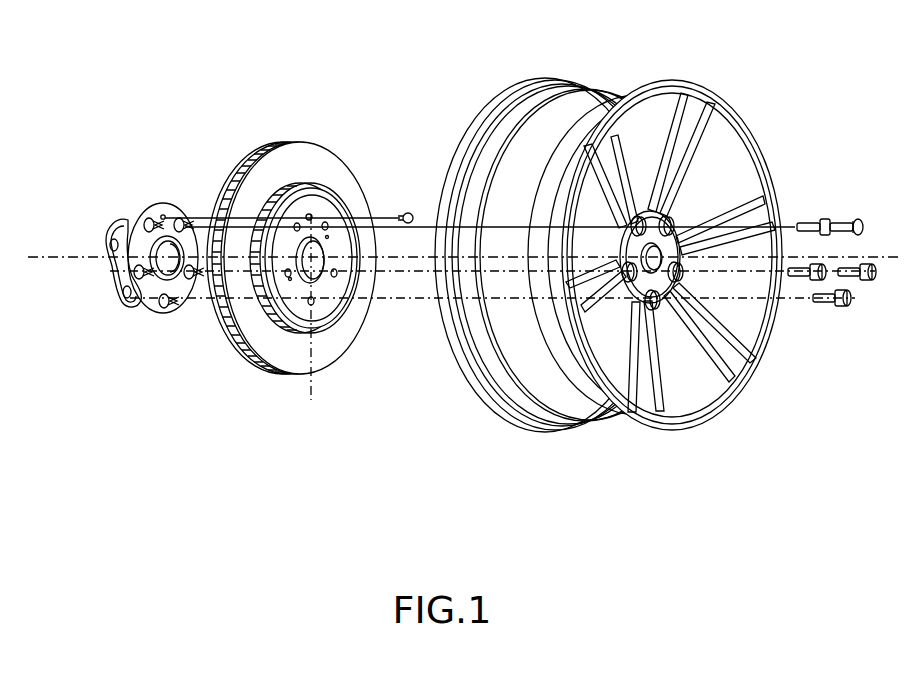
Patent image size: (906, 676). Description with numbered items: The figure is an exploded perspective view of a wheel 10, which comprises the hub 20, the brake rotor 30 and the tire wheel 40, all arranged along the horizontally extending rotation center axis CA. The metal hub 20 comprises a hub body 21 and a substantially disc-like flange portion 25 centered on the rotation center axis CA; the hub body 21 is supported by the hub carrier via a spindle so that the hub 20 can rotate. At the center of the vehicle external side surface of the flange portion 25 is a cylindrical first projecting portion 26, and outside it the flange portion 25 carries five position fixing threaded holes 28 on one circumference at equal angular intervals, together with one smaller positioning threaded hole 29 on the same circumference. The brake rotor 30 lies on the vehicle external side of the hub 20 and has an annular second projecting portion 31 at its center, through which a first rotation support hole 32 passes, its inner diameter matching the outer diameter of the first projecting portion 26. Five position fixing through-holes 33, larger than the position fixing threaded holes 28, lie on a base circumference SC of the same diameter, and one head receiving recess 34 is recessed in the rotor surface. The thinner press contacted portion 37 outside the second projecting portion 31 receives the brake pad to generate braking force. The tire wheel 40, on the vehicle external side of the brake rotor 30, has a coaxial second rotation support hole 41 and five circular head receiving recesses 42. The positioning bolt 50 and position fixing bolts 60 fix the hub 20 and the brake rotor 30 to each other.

The wheel 10 is at (415, 439).
The hub 20 is at (93, 140).
The hub body 21 is at (122, 222).
The flange portion 25 is at (156, 205).
The first projecting portion 26 is at (153, 306).
The position fixing threaded holes 28 is at (180, 223).
The positioning threaded hole 29 is at (163, 214).
The brake rotor 30 is at (295, 399).
The second projecting portion 31 is at (323, 278).
The first rotation support hole 32 is at (262, 212).
The position fixing through-holes 33 is at (296, 222).
The head receiving recess 34 is at (310, 213).
The press contacted portion 37 is at (330, 162).
The tire wheel 40 is at (593, 432).
The second rotation support hole 41 is at (785, 345).
The head receiving recesses 42 is at (688, 105).
The positioning bolt 50 is at (409, 212).
The position fixing bolts 60 is at (840, 220).
The rotation center axis CA is at (50, 255).
The base circumference SC is at (307, 321).